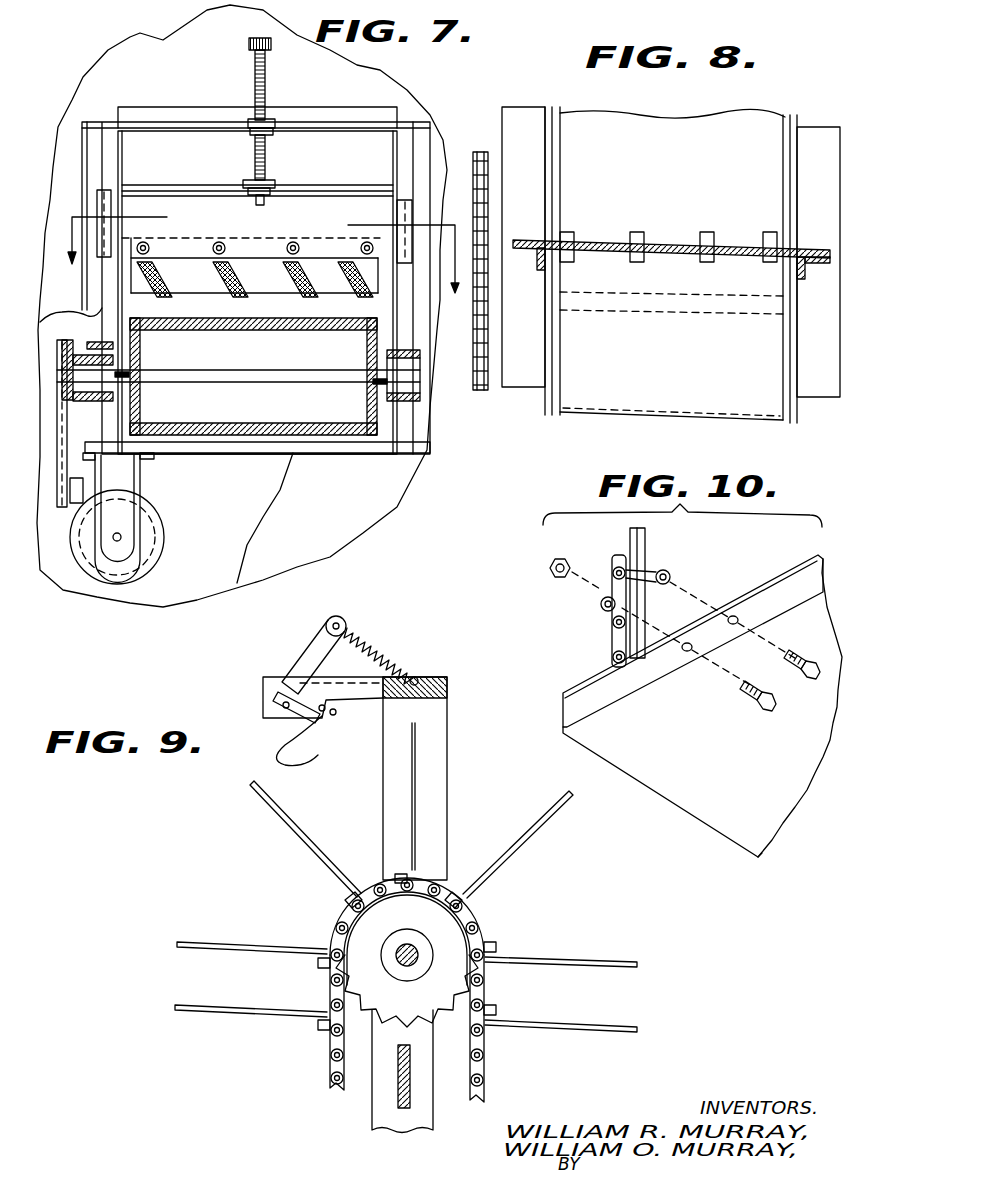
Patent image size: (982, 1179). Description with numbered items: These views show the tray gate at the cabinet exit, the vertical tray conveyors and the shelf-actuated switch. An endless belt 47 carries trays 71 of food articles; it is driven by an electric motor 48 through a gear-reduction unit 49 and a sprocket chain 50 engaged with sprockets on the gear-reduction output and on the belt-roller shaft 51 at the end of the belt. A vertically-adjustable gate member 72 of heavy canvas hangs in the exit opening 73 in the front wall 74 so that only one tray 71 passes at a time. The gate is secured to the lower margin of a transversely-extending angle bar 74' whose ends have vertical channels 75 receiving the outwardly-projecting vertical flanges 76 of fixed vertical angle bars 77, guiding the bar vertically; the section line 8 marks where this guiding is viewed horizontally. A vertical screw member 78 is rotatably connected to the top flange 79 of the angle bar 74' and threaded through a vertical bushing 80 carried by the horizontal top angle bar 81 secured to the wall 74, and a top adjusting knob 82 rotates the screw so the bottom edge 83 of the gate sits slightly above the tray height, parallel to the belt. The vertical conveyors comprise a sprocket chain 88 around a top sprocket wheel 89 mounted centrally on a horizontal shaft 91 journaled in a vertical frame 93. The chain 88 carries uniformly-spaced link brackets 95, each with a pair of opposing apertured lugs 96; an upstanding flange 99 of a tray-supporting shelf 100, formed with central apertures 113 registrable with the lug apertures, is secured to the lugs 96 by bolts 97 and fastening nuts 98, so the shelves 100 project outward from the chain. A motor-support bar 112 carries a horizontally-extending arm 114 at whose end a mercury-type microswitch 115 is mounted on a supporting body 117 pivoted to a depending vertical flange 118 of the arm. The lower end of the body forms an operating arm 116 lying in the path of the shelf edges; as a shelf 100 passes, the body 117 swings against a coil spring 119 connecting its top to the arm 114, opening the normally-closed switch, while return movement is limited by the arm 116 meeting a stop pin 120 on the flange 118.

In FIG. 7, the section line 8— 8 is at (254, 255).
In FIG. 7, the endless belt 47 is at (200, 319).
In FIG. 7, the electric motor 48 is at (160, 546).
In FIG. 7, the gear-reduction unit 49 is at (135, 484).
In FIG. 7, the sprocket chain 50 is at (70, 425).
In FIG. 7, the belt-roller shaft 51 is at (262, 379).
In FIG. 7, the tray 71 is at (322, 300).
In FIG. 7, the gate member 72 is at (300, 275).
In FIG. 7, the exit opening 73 is at (385, 296).
In FIG. 7, the front wall 74 is at (265, 260).
In FIG. 7, the angle bar 74' is at (257, 178).
In FIG. 8, the angle bar 74' is at (671, 225).
In FIG. 8, the vertical channel 75 is at (516, 262).
In FIG. 7, the vertical flange 76 is at (108, 147).
In FIG. 8, the vertical flange 76 is at (530, 240).
In FIG. 8, the fixed vertical angle bar 77 is at (540, 310).
In FIG. 7, the screw member 78 is at (266, 100).
In FIG. 7, the top flange 79 is at (313, 196).
In FIG. 7, the vertical bushing 80 is at (254, 120).
In FIG. 7, the horizontal top angle bar 81 is at (337, 118).
In FIG. 7, the adjusting knob 82 is at (249, 38).
In FIG. 7, the bottom edge 83 is at (160, 292).
In FIG. 10, the sprocket chain 88 is at (650, 541).
In FIG. 9, the sprocket chain 88 is at (335, 1072).
In FIG. 9, the top sprocket wheel 89 is at (360, 930).
In FIG. 9, the horizontal shaft 91 is at (415, 967).
In FIG. 9, the vertical frame 93 is at (372, 1112).
In FIG. 10, the link bracket 95 is at (612, 575).
In FIG. 10, the apertured lug 96 is at (672, 577).
In FIG. 10, the bolt 97 is at (750, 702).
In FIG. 9, the bolt 97 is at (496, 1010).
In FIG. 10, the fastening nut 98 is at (548, 568).
In FIG. 9, the fastening nut 98 is at (472, 1018).
In FIG. 10, the upstanding flange 99 is at (572, 700).
In FIG. 9, the upstanding flange 99 is at (490, 1002).
In FIG. 10, the tray-supporting shelf 100 is at (668, 815).
In FIG. 9, the tray-supporting shelf 100 is at (570, 957).
In FIG. 9, the motor-support bar 112 is at (435, 700).
In FIG. 10, the central aperture 113 is at (740, 623).
In FIG. 9, the horizontally-extending arm 114 is at (270, 680).
In FIG. 9, the microswitch 115 is at (280, 697).
In FIG. 9, the operating arm 116 is at (312, 760).
In FIG. 9, the supporting body 117 is at (315, 658).
In FIG. 9, the depending vertical flange 118 is at (278, 716).
In FIG. 9, the coil spring 119 is at (380, 640).
In FIG. 9, the stop pin 120 is at (286, 740).